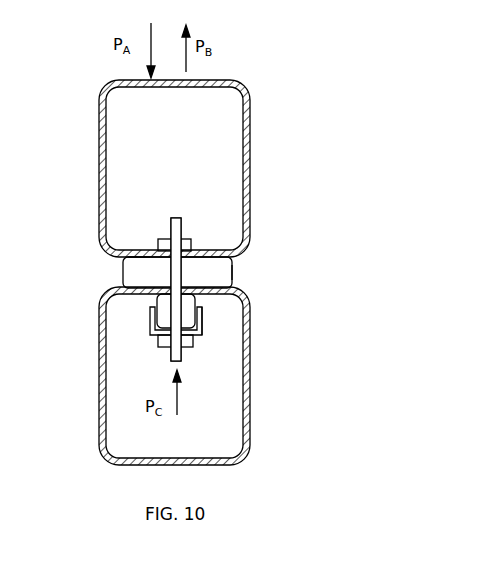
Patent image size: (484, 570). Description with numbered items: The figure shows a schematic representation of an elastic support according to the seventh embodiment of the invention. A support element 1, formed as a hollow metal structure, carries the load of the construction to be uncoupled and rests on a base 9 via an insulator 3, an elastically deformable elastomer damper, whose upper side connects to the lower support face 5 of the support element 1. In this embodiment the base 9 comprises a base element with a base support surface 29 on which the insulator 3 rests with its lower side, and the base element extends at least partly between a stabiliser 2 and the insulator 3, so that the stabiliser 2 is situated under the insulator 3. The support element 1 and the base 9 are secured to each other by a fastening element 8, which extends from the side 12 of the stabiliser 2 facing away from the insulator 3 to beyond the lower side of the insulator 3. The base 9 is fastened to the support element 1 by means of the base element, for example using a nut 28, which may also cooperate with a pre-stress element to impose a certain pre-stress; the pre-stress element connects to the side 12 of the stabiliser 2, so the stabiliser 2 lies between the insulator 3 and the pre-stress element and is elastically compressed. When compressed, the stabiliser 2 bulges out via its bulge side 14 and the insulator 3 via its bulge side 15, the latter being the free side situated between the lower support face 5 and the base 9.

The support element 1 is at (250, 103).
The stabiliser 2 is at (198, 311).
The insulator 3 is at (135, 268).
The lower support face 5 is at (122, 261).
The fastening element 8 is at (170, 222).
The base 9 is at (100, 412).
The upper side of the stabiliser 12 is at (158, 333).
The bulge side of the stabiliser 14 is at (150, 308).
The bulge side of the insulator 15 is at (230, 277).
The nut 28 is at (190, 248).
The base support surface 29 is at (200, 313).